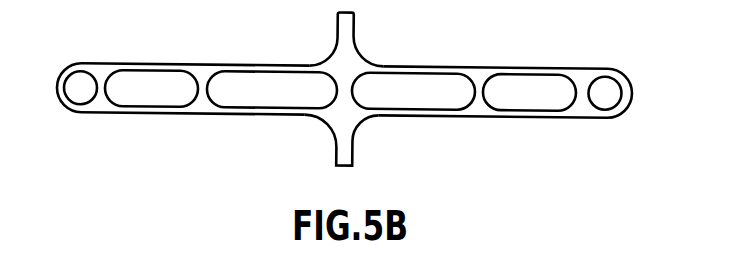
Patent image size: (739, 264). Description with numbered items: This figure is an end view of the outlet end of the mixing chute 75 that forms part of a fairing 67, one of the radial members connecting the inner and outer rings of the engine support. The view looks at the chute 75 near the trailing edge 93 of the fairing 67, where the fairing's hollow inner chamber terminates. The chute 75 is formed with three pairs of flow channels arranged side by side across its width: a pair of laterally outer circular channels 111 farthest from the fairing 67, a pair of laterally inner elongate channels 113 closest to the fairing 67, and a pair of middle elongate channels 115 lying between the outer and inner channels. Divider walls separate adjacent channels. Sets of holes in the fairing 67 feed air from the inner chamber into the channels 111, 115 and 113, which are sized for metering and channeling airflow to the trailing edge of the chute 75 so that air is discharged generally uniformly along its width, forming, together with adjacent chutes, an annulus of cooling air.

The mixing chute 75 is at (432, 64).
The trailing edge 93 is at (356, 25).
The fairing 67 is at (332, 143).
The outer circular channels 111 is at (73, 82).
The middle elongate channels 115 is at (170, 80).
The inner elongate channels 113 is at (273, 95).